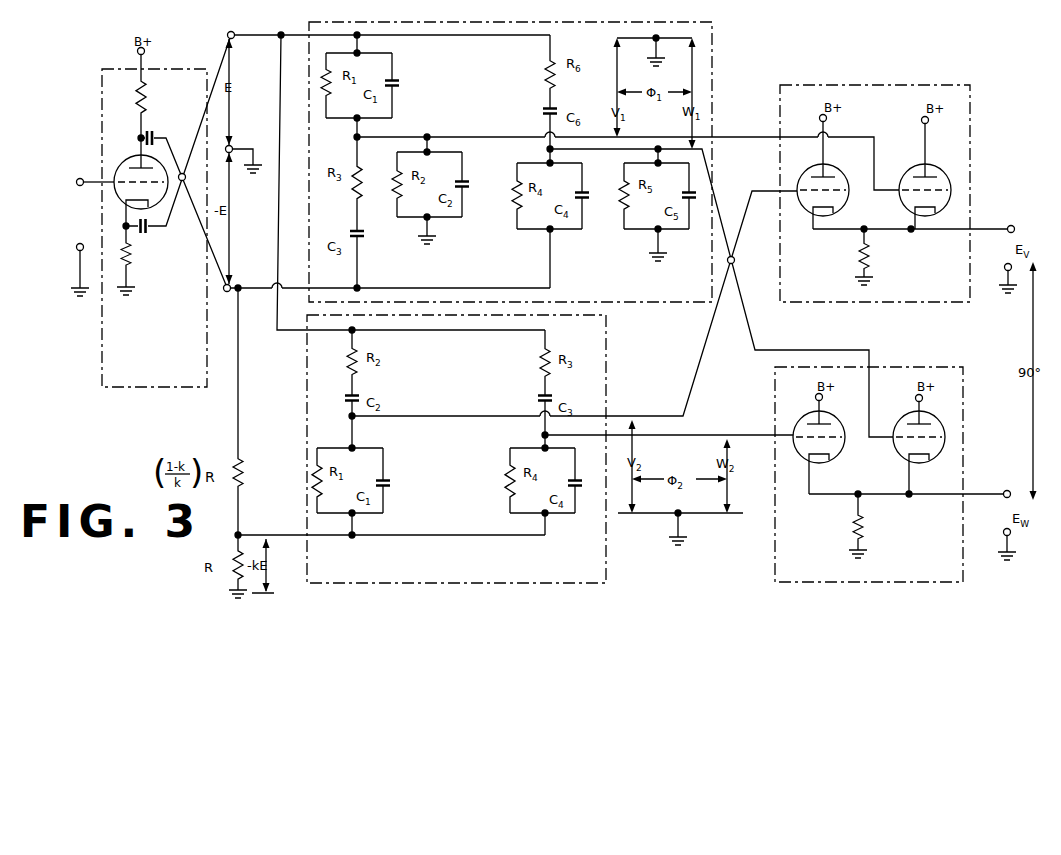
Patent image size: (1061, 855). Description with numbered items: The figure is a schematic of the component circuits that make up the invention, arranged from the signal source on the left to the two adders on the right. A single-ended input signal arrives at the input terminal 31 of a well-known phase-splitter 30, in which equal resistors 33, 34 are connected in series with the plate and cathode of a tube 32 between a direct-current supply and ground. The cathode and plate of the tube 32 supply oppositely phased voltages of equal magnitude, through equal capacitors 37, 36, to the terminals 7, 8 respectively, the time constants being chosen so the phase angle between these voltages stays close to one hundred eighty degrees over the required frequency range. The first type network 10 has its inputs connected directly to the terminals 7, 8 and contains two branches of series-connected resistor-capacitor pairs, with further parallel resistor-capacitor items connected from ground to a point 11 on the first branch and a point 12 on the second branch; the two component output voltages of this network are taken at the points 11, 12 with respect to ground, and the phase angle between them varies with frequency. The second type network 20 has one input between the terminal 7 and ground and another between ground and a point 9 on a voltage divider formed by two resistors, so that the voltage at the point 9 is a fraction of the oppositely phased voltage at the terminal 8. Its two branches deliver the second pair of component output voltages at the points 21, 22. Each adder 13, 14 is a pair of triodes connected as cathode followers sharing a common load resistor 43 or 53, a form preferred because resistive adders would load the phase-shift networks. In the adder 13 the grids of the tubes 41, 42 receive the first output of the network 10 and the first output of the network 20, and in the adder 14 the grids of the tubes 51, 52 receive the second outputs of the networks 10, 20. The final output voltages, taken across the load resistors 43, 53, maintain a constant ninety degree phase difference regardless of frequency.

The terminal 7 is at (228, 32).
The terminal 8 is at (238, 285).
The point on voltage-divider network 9 is at (239, 532).
The first type network 10 is at (531, 282).
The point on the first branch 11 is at (354, 139).
The point on the second branch 12 is at (547, 150).
The adder 13 is at (938, 294).
The adder 14 is at (929, 570).
The second type network 20 is at (491, 576).
The point of the first branch 21 is at (349, 416).
The point of the second branch 22 is at (542, 436).
The phase-splitter 30 is at (151, 378).
The single-ended input terminal 31 is at (77, 176).
The tube 32 is at (124, 161).
The resistor 33 is at (146, 105).
The resistor 34 is at (131, 258).
The capacitor 36 is at (152, 132).
The capacitor 37 is at (151, 231).
The tube 41 is at (849, 166).
The tube 42 is at (950, 166).
The common load resistor 43 is at (857, 248).
The tube 51 is at (838, 456).
The tube 52 is at (937, 456).
The common load resistor 53 is at (852, 515).